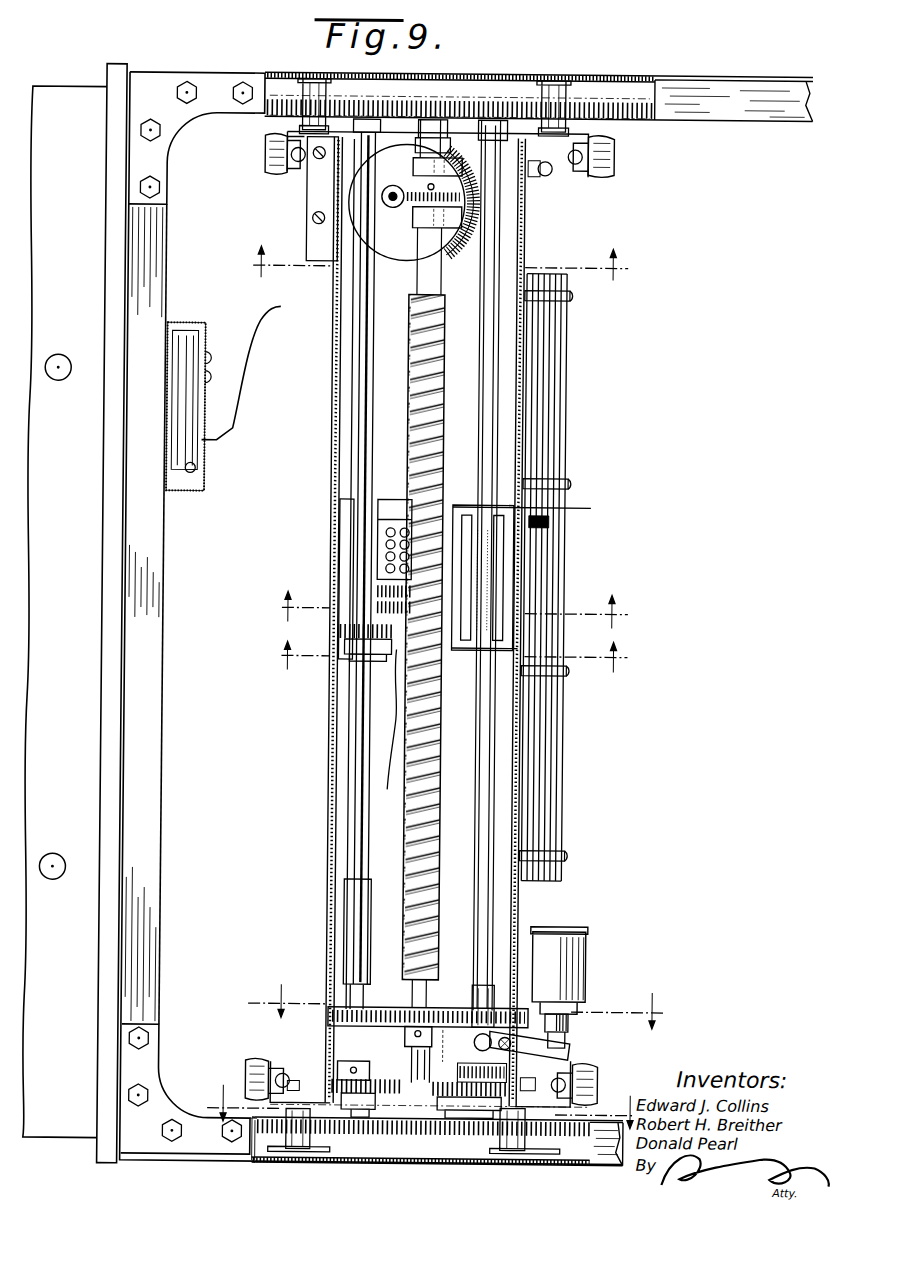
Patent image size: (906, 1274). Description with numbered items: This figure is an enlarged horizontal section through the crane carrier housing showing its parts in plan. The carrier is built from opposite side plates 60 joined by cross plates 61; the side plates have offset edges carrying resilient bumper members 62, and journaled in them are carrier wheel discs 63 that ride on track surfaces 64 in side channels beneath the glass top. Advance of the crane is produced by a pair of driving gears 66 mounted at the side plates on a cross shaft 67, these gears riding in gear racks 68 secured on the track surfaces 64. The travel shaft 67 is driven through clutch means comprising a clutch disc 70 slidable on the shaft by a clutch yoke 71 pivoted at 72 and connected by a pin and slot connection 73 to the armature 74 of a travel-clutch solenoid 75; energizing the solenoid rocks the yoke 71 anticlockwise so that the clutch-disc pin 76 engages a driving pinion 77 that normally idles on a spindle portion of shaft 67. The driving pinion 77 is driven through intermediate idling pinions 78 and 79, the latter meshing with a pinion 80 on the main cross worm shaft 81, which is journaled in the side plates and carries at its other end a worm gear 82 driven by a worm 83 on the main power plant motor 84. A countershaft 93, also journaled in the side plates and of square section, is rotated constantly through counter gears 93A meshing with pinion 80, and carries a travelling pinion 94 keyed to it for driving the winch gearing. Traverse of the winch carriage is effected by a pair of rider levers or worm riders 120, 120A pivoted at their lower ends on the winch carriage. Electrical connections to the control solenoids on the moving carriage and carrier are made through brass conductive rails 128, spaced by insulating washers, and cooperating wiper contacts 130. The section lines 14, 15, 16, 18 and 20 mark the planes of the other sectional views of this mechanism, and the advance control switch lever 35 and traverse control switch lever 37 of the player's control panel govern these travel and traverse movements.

The section line 14- 14 is at (456, 997).
The section line 15- 15 is at (425, 1096).
The section line 16- 16 is at (451, 656).
The section line 18- 18 is at (451, 610).
The section line 20- 20 is at (438, 263).
The advance control switch lever 35 is at (60, 383).
The traverse control switch lever 37 is at (55, 857).
The side plates 60 is at (390, 134).
The cross plates 61 is at (330, 821).
The resilient bumper members 62 is at (262, 143).
The carrier wheel discs 63 is at (340, 79).
The track surfaces 64 is at (641, 97).
The driving gears 66 is at (467, 101).
The cross shaft 67 is at (478, 398).
The gear racks 68 is at (575, 113).
The clutch disc 70 is at (450, 1010).
The clutch yoke 71 is at (478, 1010).
The pivot 72 is at (516, 1046).
The pin and slot connection 73 is at (579, 1054).
The armature 74 is at (574, 1039).
The travel-clutch solenoid 75 is at (589, 946).
The clutch-disc pin 76 is at (395, 1120).
The driving pinion 77 is at (505, 1100).
The intermediate idling pinion 78 is at (453, 1120).
The intermediate idling pinion 79 is at (434, 1030).
The pinion 80 is at (419, 1008).
The main cross worm shaft 81 is at (442, 492).
The worm gear 82 is at (419, 214).
The worm 83 is at (389, 186).
The main power plant motor 84 is at (407, 256).
The countershaft 93 is at (351, 886).
The counter gears 93A is at (405, 1049).
The travelling pinion 94 is at (340, 633).
The rider lever 120 is at (394, 498).
The rider lever 120A is at (397, 650).
The conductive rails 128 is at (569, 360).
The wiper contacts 130 is at (548, 522).